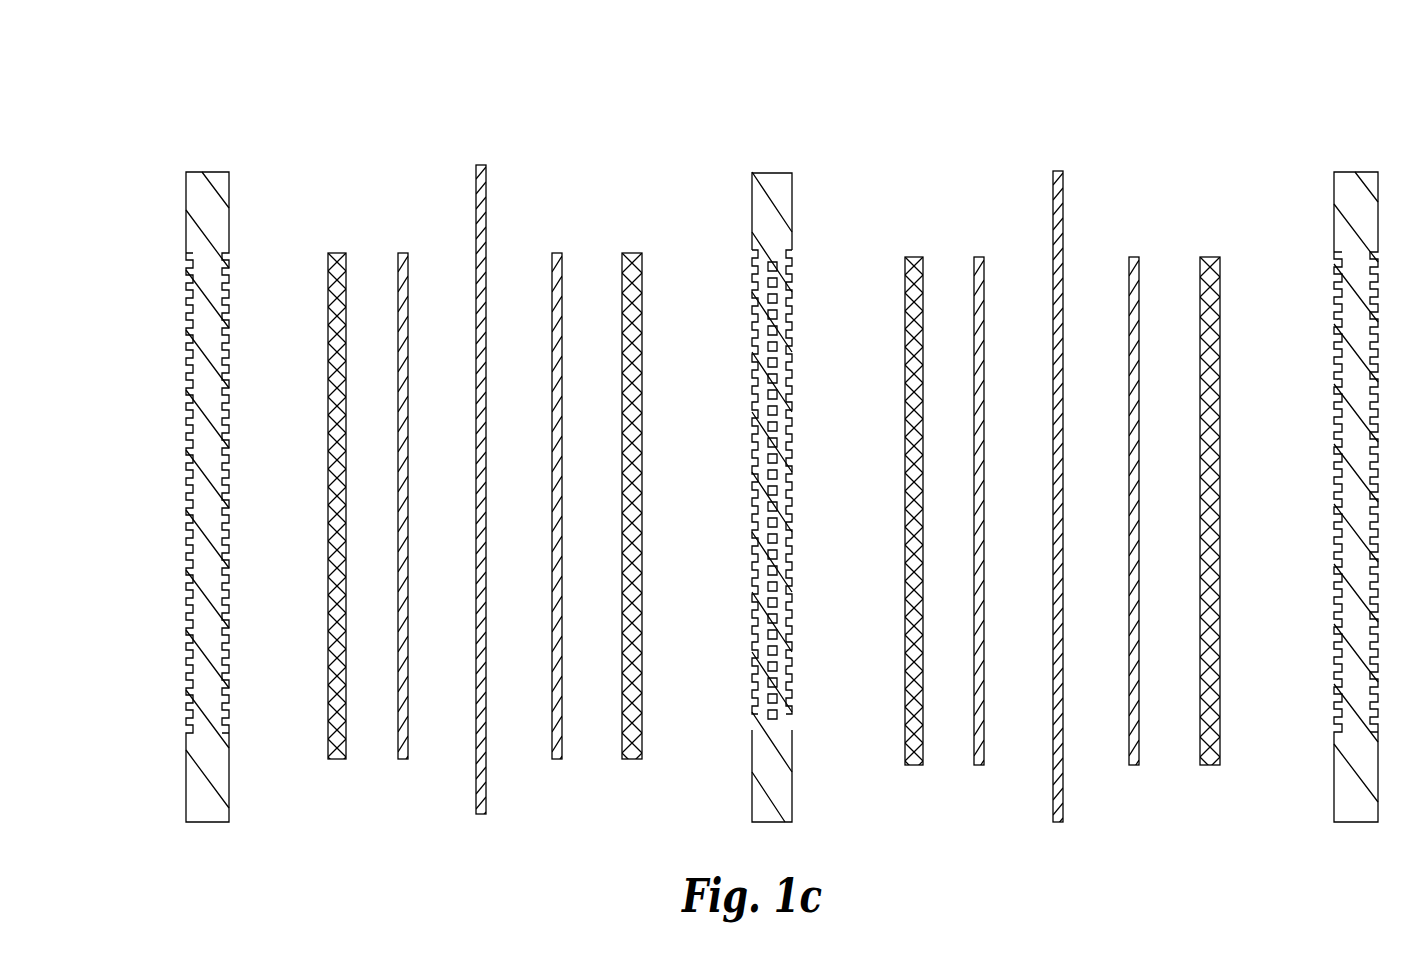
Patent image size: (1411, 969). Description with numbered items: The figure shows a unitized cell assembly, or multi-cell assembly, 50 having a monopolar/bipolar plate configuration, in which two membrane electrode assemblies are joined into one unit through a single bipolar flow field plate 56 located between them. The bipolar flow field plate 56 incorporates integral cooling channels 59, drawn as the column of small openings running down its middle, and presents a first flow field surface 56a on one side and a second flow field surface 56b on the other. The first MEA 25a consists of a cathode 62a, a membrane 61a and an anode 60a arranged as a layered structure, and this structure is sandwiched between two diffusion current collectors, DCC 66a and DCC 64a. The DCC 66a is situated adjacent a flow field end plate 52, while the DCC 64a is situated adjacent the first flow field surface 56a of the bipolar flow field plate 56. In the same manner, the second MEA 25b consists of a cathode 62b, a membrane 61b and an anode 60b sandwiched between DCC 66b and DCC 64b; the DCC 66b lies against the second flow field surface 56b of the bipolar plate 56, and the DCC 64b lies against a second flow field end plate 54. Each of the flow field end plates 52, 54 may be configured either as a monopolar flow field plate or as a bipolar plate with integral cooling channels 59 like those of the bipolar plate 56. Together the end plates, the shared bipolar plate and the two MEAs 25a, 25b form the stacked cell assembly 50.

The unitized cell assembly 50 is at (362, 92).
The flow field end plate 52 is at (207, 172).
The flow field end plate 54 is at (1355, 172).
The bipolar flow field plate 56 is at (775, 173).
The first flow field surface 56a is at (752, 312).
The second flow field surface 56b is at (790, 314).
The integral cooling channels 59 is at (768, 255).
The MEA 25a is at (643, 770).
The MEA 25b is at (1222, 770).
The membrane 61a is at (482, 165).
The membrane 61b is at (1058, 171).
The cathode 62a is at (405, 253).
The cathode 62b is at (978, 257).
The anode 60a is at (558, 253).
The anode 60b is at (1133, 257).
The DCC 66a is at (338, 253).
The DCC 66b is at (910, 257).
The DCC 64a is at (633, 253).
The DCC 64b is at (1207, 257).